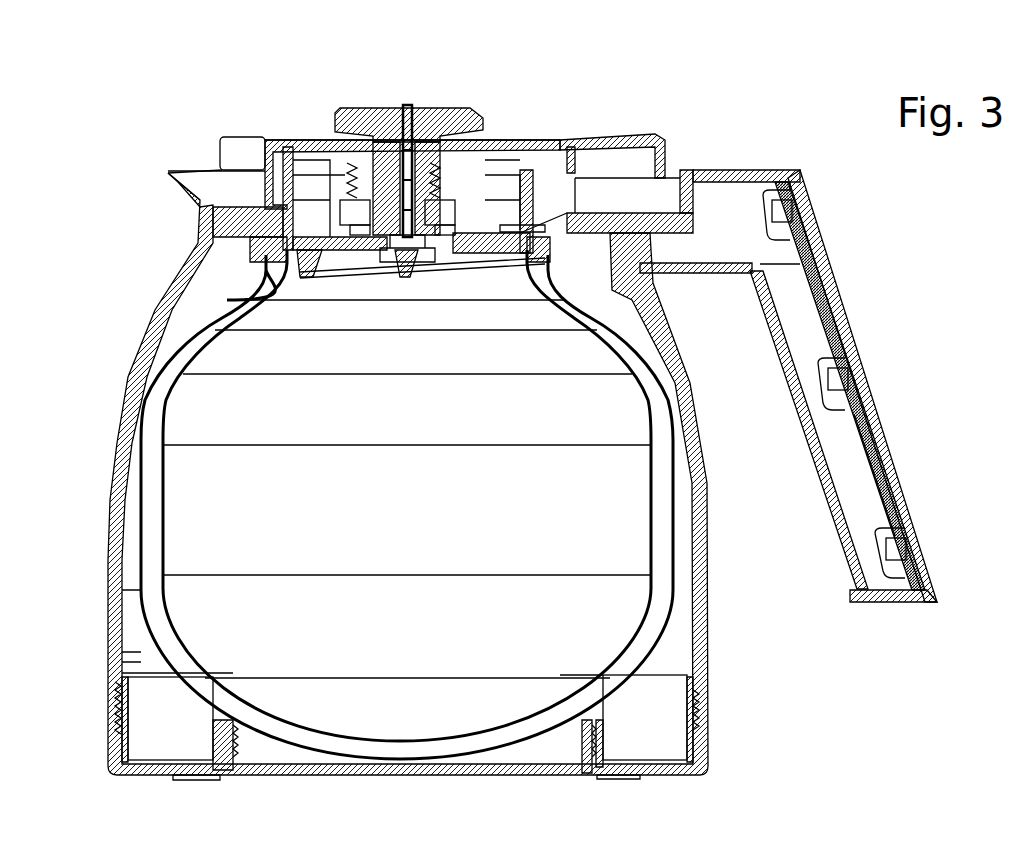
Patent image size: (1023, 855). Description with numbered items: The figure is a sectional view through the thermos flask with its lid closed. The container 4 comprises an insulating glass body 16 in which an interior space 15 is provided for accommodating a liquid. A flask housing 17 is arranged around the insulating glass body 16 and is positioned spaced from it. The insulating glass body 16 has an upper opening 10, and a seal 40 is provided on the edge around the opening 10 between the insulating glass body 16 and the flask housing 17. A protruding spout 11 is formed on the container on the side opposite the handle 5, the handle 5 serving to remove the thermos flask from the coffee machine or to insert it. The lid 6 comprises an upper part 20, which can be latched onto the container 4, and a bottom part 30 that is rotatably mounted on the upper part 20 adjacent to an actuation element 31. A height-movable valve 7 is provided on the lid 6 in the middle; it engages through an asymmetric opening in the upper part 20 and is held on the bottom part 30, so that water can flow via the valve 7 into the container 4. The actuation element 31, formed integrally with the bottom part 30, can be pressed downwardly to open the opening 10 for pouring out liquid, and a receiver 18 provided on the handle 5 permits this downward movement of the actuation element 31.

The container 4 is at (752, 655).
The handle 5 is at (841, 446).
The lid 6 is at (597, 107).
The valve 7 is at (382, 108).
The opening 10 is at (440, 277).
The spout 11 is at (213, 182).
The interior space 15 is at (407, 489).
The insulating glass body 16 is at (152, 503).
The flask housing 17 is at (118, 595).
The receiver 18 is at (650, 200).
The upper part 20 is at (487, 157).
The bottom part 30 is at (490, 232).
The actuation element 31 is at (663, 140).
The seal 40 is at (220, 243).